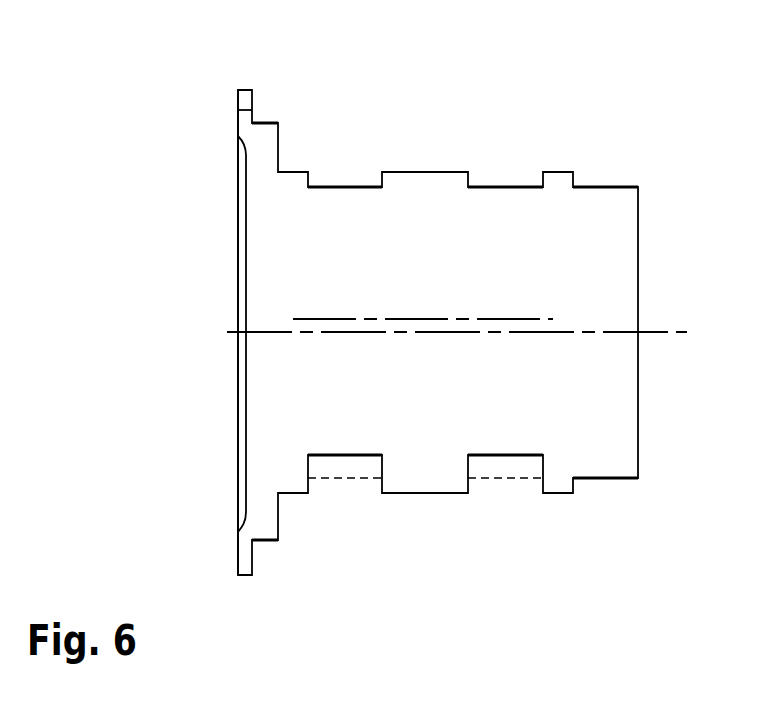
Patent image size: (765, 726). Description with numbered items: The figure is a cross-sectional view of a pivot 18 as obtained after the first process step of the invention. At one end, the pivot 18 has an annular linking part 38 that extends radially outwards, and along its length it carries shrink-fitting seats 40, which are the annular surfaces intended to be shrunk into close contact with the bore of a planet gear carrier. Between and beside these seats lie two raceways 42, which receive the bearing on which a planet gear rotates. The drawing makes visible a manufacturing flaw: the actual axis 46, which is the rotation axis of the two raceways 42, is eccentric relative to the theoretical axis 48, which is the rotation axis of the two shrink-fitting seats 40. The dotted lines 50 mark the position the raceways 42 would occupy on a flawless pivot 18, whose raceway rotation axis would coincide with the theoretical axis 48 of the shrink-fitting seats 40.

The pivot 18 is at (203, 431).
The annular linking part 38 is at (238, 543).
The shrink-fitting seat 40 is at (265, 122).
The raceway 42 is at (345, 186).
The actual axis 46 is at (545, 319).
The theoretical axis 48 is at (590, 332).
The dotted lines 50 is at (346, 480).